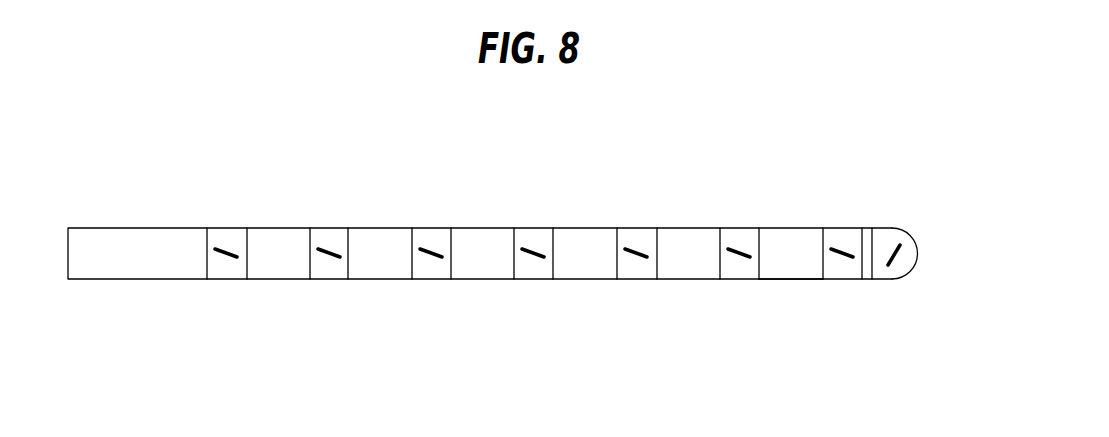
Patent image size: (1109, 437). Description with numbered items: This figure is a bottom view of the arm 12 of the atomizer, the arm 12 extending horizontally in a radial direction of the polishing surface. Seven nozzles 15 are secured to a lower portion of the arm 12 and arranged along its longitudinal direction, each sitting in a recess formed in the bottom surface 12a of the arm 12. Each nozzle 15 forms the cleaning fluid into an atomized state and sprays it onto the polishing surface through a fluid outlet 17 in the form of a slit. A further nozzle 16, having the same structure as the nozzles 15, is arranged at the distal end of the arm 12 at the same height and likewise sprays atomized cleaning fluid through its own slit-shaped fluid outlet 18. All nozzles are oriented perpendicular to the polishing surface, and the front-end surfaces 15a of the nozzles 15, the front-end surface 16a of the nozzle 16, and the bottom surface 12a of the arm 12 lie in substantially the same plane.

The arm 12 is at (797, 228).
The bottom surface of the arm 12a is at (795, 265).
The nozzle 15 is at (243, 287).
The front-end surface 15a is at (223, 268).
The nozzle 16 is at (920, 278).
The front-end surface 16a is at (887, 272).
The fluid outlet 17 is at (228, 250).
The fluid outlet 18 is at (897, 258).